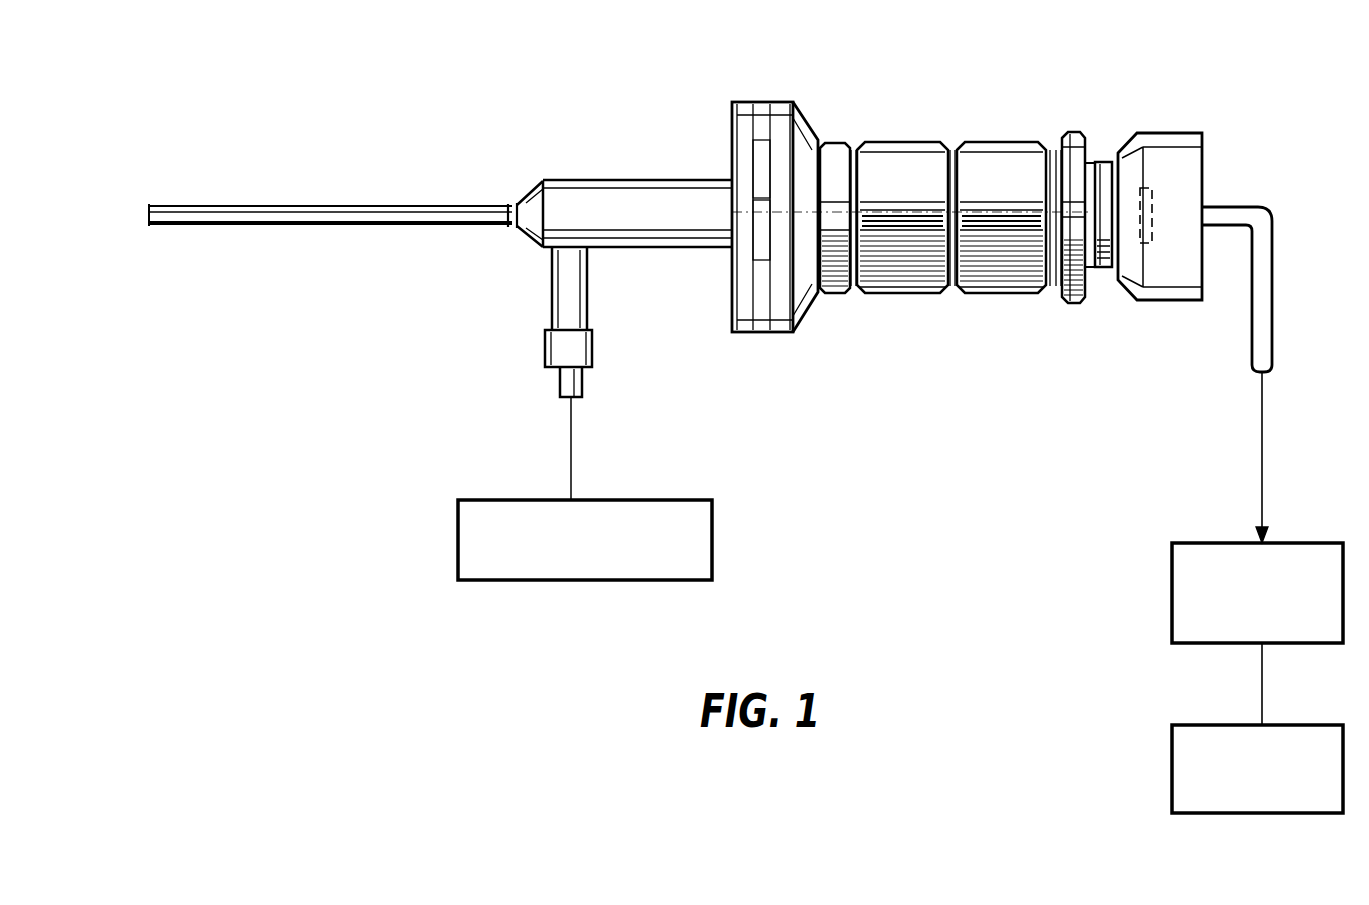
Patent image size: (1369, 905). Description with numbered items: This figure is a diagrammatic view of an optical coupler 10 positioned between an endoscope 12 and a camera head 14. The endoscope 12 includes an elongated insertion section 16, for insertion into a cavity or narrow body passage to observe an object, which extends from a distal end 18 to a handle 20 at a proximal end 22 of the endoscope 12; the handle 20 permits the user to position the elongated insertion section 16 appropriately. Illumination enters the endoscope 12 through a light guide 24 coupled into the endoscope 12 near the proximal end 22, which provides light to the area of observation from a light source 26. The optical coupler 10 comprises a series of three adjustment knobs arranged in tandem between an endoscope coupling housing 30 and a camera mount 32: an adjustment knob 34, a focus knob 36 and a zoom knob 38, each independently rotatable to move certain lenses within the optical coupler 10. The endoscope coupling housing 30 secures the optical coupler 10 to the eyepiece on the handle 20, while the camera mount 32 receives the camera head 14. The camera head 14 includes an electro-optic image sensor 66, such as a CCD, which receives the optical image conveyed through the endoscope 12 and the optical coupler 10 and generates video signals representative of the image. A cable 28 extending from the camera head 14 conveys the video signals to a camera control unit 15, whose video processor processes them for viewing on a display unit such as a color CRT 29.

The optical coupler 10 is at (1093, 55).
The endoscope 12 is at (342, 108).
The camera head 14 is at (1182, 128).
The camera control unit 15 is at (1172, 578).
The elongated insertion section 16 is at (326, 225).
The distal end 18 is at (148, 222).
The handle 20 is at (561, 182).
The proximal end 22 is at (640, 250).
The light guide 24 is at (595, 352).
The light source 26 is at (715, 523).
The cable 28 is at (1274, 236).
The color CRT 29 is at (1172, 762).
The endoscope coupling housing 30 is at (806, 318).
The camera mount 32 is at (1112, 270).
The adjustment knob 34 is at (833, 144).
The focus knob 36 is at (908, 144).
The zoom knob 38 is at (998, 144).
The electro-optic image sensor 66 is at (1152, 195).